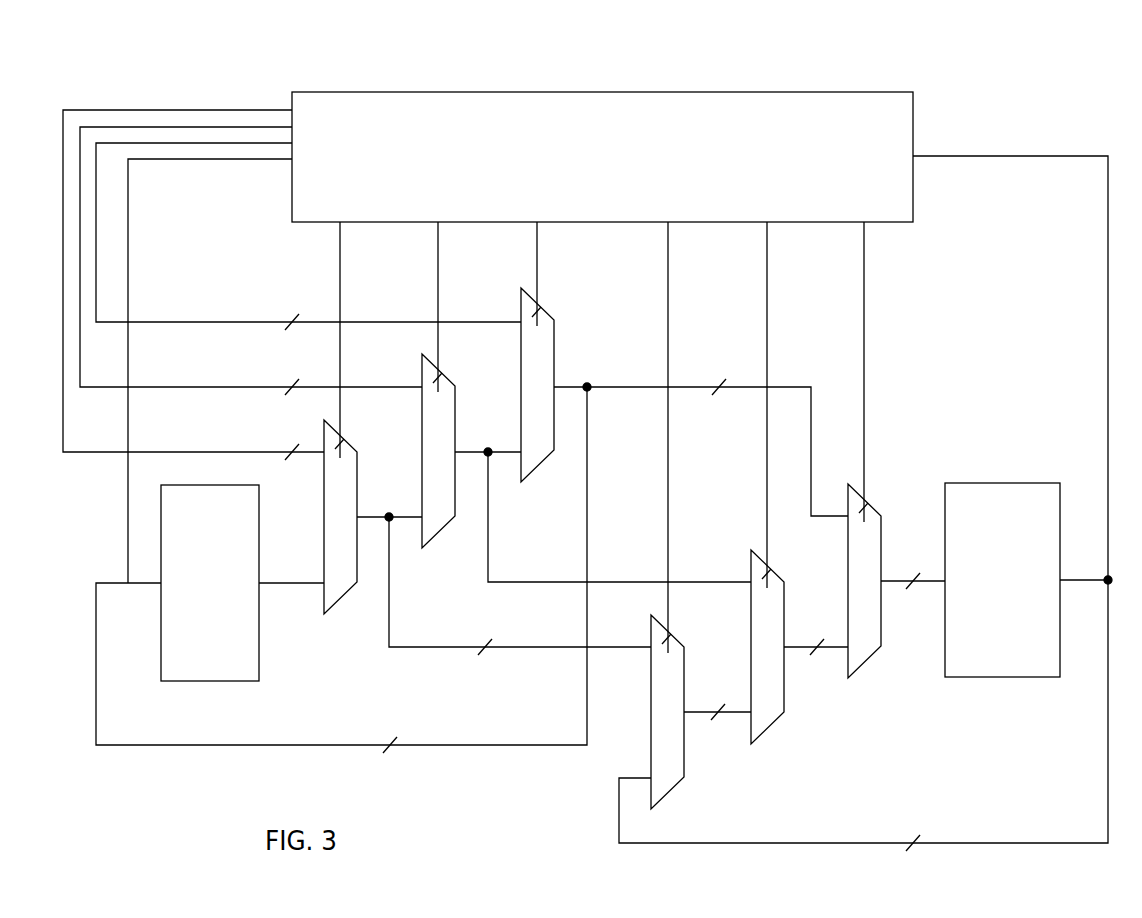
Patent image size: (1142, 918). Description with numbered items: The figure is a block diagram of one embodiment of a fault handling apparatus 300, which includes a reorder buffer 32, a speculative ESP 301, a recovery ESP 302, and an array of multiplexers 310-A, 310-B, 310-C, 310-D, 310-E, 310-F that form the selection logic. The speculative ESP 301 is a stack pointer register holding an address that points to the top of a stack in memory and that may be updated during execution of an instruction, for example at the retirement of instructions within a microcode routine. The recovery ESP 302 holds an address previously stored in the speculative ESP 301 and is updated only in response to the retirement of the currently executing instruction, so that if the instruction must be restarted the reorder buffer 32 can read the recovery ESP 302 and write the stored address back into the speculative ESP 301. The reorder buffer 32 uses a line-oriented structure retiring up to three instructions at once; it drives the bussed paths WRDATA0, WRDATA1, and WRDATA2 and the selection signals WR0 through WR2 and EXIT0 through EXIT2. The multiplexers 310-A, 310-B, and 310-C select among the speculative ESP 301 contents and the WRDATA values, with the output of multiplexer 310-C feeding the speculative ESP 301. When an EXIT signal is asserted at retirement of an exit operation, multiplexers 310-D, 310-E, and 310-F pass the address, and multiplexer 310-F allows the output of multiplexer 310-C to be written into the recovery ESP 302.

The fault handling apparatus 300 is at (200, 60).
The reorder buffer 32 is at (889, 86).
The speculative ESP 301 is at (267, 670).
The recovery ESP 302 is at (1003, 684).
The multiplexer 310-A is at (332, 617).
The multiplexer 310-B is at (434, 551).
The multiplexer 310-C is at (532, 487).
The multiplexer 310-D is at (667, 803).
The multiplexer 310-E is at (763, 746).
The multiplexer 310-F is at (859, 684).